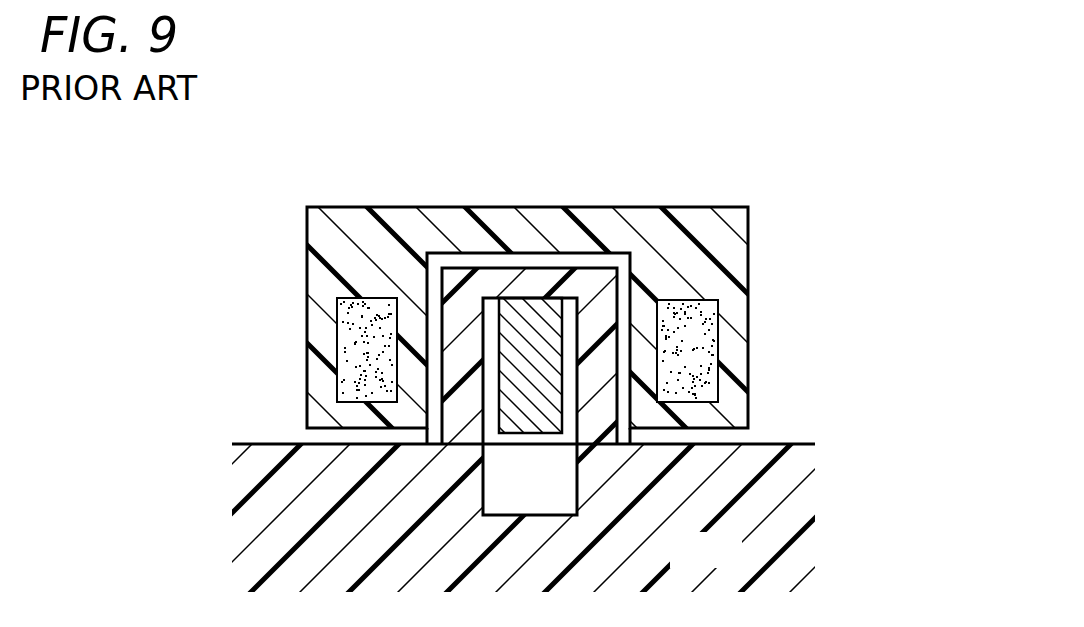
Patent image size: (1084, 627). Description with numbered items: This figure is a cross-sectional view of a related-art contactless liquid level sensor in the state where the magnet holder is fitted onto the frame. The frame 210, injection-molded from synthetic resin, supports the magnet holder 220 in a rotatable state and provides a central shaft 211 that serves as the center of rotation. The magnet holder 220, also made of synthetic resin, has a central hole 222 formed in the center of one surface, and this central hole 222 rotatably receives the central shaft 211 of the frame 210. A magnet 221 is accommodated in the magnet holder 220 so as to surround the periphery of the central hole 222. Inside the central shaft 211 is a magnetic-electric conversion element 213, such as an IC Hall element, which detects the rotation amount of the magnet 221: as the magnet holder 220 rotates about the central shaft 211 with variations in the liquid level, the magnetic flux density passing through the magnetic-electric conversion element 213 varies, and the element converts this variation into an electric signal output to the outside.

The frame 210 is at (734, 563).
The central shaft 211 is at (592, 286).
The magnetic-electric conversion element 213 is at (527, 312).
The magnet holder 220 is at (338, 208).
The magnet 221 is at (355, 343).
The central hole 222 is at (428, 327).